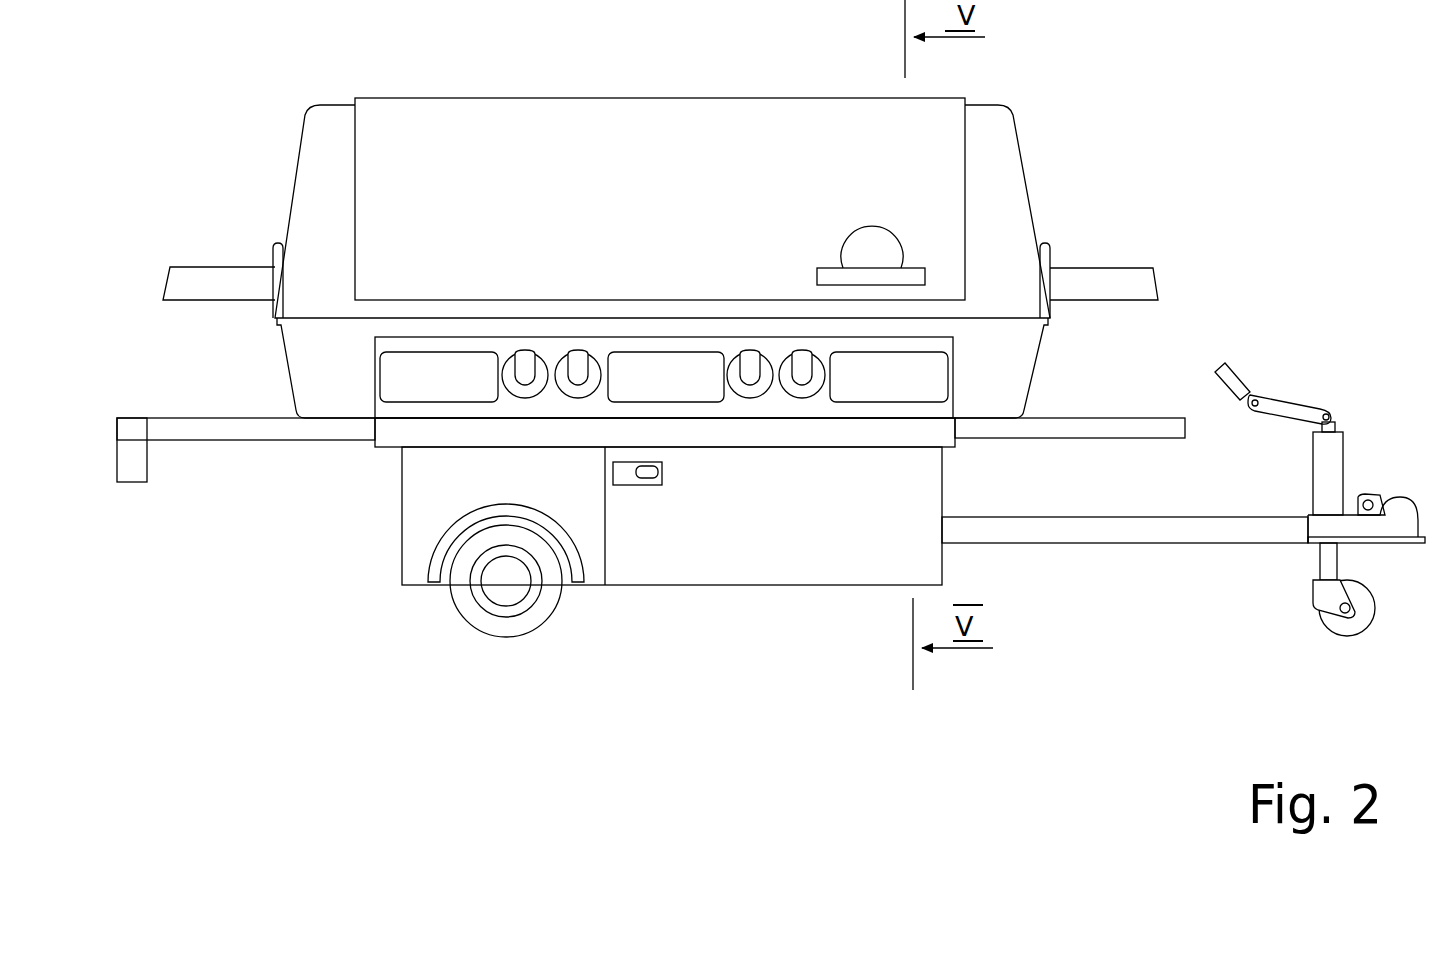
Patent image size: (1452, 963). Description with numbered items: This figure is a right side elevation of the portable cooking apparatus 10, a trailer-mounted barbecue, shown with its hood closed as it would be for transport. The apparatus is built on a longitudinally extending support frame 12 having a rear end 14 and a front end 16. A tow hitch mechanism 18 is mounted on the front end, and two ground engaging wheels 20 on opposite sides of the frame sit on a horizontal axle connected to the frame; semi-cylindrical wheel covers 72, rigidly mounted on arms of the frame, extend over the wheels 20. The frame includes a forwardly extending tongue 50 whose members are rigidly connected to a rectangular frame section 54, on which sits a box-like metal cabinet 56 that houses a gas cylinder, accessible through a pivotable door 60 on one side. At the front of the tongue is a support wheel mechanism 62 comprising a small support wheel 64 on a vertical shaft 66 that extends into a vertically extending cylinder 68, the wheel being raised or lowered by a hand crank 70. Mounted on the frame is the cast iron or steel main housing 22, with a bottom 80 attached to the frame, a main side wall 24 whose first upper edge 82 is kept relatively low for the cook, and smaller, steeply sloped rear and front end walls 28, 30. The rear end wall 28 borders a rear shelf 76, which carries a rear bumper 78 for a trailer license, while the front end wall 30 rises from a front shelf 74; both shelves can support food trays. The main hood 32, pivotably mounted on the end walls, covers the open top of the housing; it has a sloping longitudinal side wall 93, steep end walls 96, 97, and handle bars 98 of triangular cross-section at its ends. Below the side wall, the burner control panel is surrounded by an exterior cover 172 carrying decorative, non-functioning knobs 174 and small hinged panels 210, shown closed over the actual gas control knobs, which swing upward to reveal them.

The portable cooking apparatus 10 is at (658, 92).
The support frame 12 is at (1125, 534).
The rear end 14 is at (648, 435).
The front end 16 is at (1292, 515).
The tow hitch mechanism 18 is at (1393, 513).
The ground engaging wheels 20 is at (538, 613).
The main housing 22 is at (1025, 354).
The main side wall 24 is at (1007, 394).
The rear end wall 28 is at (285, 358).
The front end wall 30 is at (1037, 383).
The main hood 32 is at (988, 163).
The tongue 50 is at (1243, 535).
The rectangular frame section 54 is at (1050, 545).
The cabinet 56 is at (756, 574).
The pivotable door 60 is at (775, 516).
The support wheel mechanism 62 is at (1322, 499).
The support wheel 64 is at (1365, 603).
The vertical shaft 66 is at (1330, 560).
The vertically extending cylinder 68 is at (1325, 448).
The hand crank 70 is at (1280, 410).
The wheel covers 72 is at (486, 506).
The front shelf 74 is at (1128, 422).
The rear shelf 76 is at (210, 418).
The rear bumper 78 is at (133, 458).
The bottom 80 is at (348, 420).
The first upper edge 82 is at (320, 318).
The hood side wall 93 is at (673, 210).
The hood end wall 96 is at (1030, 207).
The hood end wall 97 is at (296, 165).
The handle bars 98 is at (218, 277).
The exterior cover 172 is at (701, 383).
The decorative knobs 174 is at (803, 388).
The hinged panels 210 is at (465, 392).